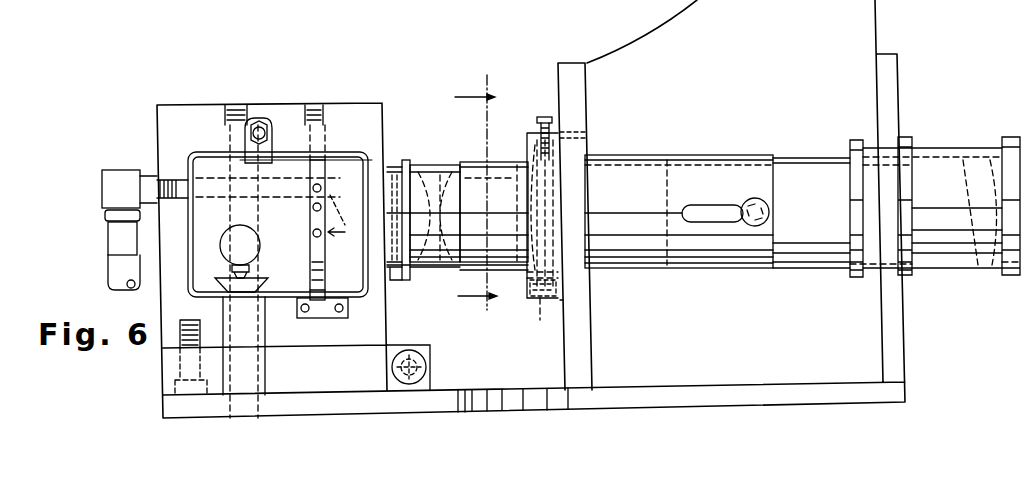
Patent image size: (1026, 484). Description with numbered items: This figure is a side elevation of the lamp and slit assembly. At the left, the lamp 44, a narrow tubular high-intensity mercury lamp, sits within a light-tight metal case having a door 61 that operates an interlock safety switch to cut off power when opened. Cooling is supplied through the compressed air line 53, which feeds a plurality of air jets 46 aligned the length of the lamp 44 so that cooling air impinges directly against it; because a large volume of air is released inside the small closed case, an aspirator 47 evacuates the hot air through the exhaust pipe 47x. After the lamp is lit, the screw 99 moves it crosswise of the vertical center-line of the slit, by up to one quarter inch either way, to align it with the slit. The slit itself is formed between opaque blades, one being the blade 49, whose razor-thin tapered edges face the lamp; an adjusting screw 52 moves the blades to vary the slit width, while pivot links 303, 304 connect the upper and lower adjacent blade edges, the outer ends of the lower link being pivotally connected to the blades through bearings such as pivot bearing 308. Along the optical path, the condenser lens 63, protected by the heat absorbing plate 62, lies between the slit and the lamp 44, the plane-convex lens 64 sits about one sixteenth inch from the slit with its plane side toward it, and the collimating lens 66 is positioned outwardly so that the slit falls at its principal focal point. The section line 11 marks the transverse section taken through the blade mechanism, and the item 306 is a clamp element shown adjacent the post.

The section line 11- 11 is at (471, 193).
The lamp 44 is at (308, 210).
The air jets 46 is at (351, 222).
The aspirator 47 is at (260, 250).
The exhaust pipe 47x is at (263, 326).
The blade 49 is at (560, 210).
The adjusting screw 52 is at (545, 116).
The compressed air line 53 is at (128, 168).
The door 61 is at (398, 172).
The heat absorbing plate 62 is at (420, 170).
The condenser lens 63 is at (446, 170).
The plane-convex lens 64 is at (518, 165).
The collimating lens 66 is at (975, 150).
The screw 99 is at (420, 358).
The pivot link 303 is at (572, 144).
The pivot link 304 is at (563, 290).
The upper clamp block 306 is at (562, 136).
The pivot bearing 308 is at (541, 238).